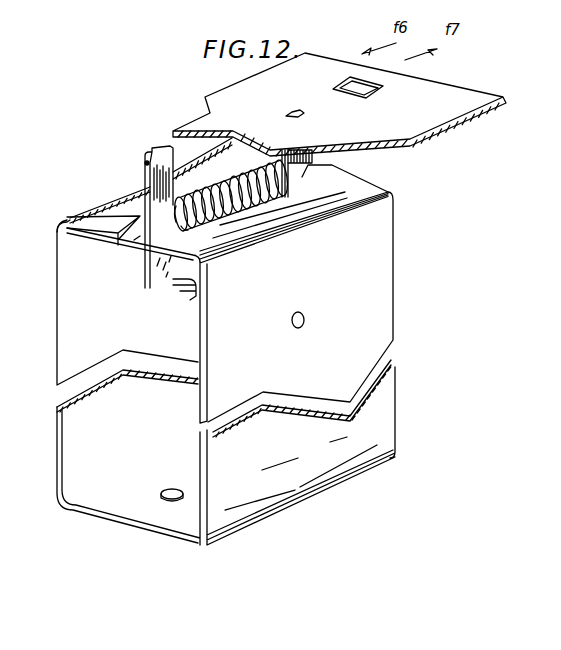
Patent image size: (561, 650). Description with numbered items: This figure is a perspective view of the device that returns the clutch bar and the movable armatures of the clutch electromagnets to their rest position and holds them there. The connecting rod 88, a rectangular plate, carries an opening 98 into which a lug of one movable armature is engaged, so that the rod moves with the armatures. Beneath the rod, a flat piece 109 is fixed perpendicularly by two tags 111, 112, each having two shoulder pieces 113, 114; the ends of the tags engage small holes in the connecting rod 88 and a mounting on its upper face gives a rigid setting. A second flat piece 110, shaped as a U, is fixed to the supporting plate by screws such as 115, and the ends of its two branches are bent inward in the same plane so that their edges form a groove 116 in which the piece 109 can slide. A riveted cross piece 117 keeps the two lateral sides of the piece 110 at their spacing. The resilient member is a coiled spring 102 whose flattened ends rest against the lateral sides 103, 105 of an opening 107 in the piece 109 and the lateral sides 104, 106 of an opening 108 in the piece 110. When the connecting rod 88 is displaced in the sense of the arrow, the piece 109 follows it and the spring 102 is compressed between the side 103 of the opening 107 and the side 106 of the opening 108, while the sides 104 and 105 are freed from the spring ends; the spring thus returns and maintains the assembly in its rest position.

The connecting rod 88 is at (462, 98).
The opening 98 is at (357, 93).
The coiled spring 102 is at (245, 207).
The lateral side 103 is at (313, 159).
The lateral side 104 is at (289, 157).
The lateral side 105 is at (145, 208).
The lateral side 106 is at (62, 231).
The opening 107 is at (178, 205).
The opening 108 is at (185, 229).
The flat piece 109 is at (127, 202).
The U-shaped piece 110 is at (72, 303).
The tag 111 is at (165, 150).
The tag 112 is at (286, 116).
The shoulder piece 113 is at (145, 163).
The shoulder piece 114 is at (172, 150).
The screw 115 is at (162, 493).
The groove 116 is at (134, 240).
The riveted cross piece 117 is at (187, 295).